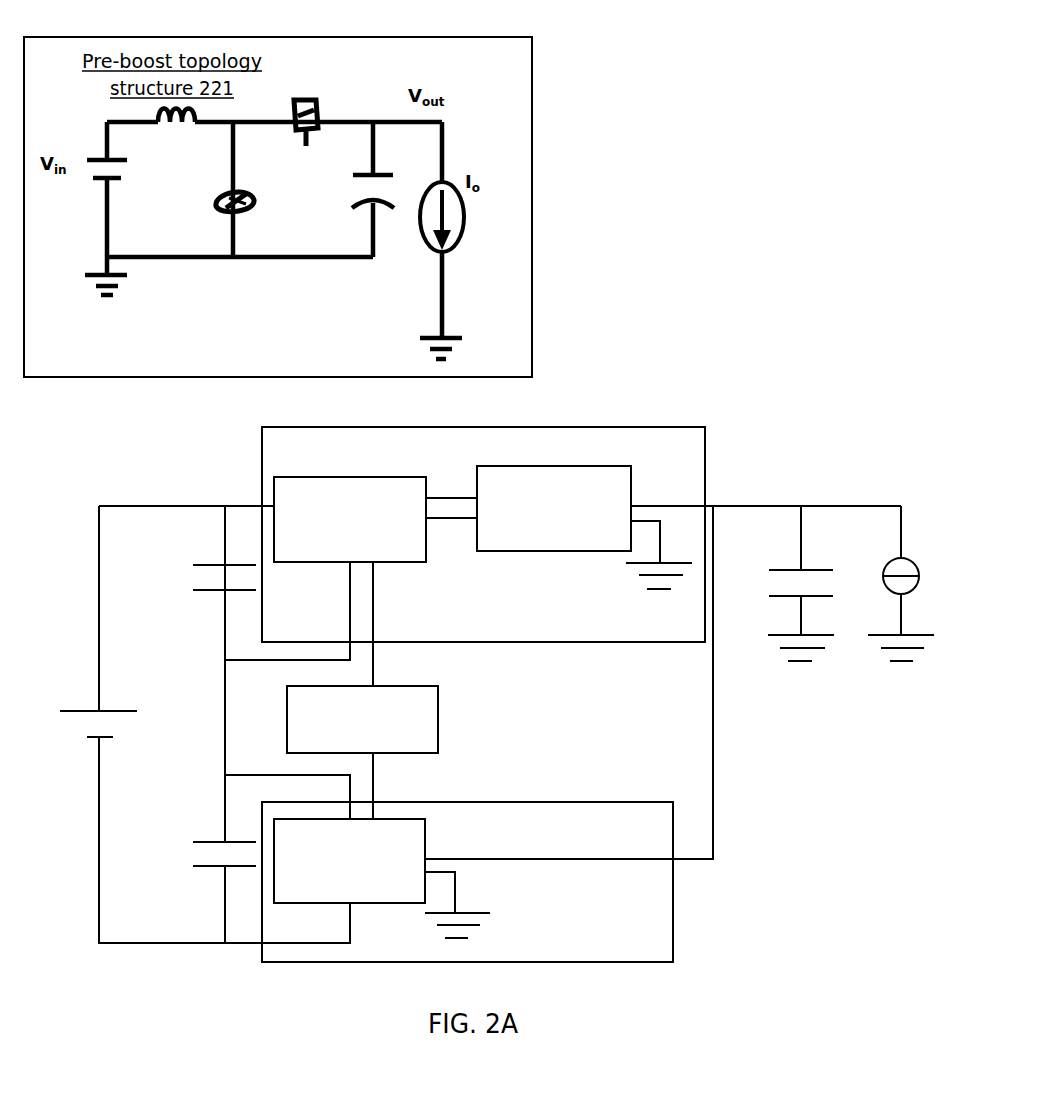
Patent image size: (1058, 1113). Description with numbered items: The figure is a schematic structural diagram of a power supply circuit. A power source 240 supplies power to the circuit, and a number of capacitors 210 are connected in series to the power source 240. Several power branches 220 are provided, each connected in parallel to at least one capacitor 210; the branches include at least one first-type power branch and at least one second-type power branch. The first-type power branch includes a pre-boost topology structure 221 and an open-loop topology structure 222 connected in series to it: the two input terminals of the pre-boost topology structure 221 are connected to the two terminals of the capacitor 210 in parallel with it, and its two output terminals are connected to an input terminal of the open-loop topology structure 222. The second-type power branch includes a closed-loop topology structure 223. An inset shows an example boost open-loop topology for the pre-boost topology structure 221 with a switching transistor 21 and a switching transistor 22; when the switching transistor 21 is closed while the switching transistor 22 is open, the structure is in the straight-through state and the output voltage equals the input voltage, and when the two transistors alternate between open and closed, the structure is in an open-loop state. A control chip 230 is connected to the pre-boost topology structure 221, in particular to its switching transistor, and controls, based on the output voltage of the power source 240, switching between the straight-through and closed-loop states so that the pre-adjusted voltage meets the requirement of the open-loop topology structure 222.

The switching transistor 21 is at (247, 198).
The switching transistor 22 is at (302, 104).
The capacitor 210 is at (207, 592).
The power branch 220 is at (505, 437).
The pre-boost topology structure 221 is at (397, 548).
The open-loop topology structure 222 is at (603, 482).
The closed-loop topology structure 223 is at (372, 904).
The control chip 230 is at (438, 729).
The power source 240 is at (82, 710).